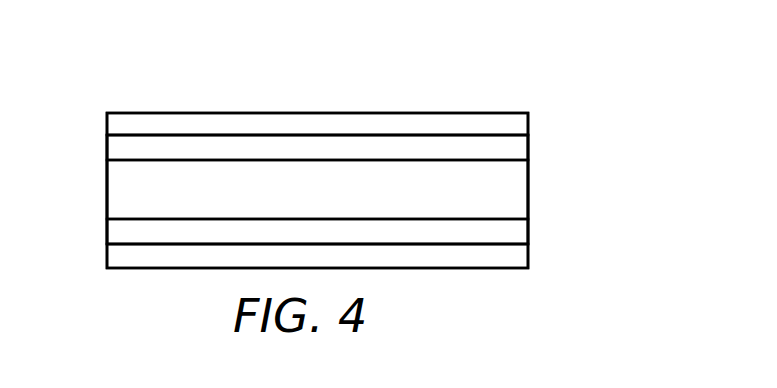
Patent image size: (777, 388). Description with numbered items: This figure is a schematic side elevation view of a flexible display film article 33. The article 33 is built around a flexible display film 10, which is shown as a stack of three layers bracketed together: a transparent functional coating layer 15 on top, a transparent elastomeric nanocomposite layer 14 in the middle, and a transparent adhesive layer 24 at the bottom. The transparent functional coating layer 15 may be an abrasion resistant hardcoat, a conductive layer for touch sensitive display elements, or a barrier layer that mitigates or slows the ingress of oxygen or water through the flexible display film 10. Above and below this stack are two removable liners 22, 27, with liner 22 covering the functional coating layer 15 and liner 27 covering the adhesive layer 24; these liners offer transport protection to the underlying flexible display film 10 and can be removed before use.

The flexible display film article 33 is at (474, 80).
The removable liner 22 is at (528, 124).
The transparent functional coating layer 15 is at (528, 151).
The transparent elastomeric nanocomposite layer 14 is at (335, 207).
The transparent adhesive layer 24 is at (528, 226).
The removable liner 27 is at (528, 259).
The flexible display film 10 is at (86, 138).